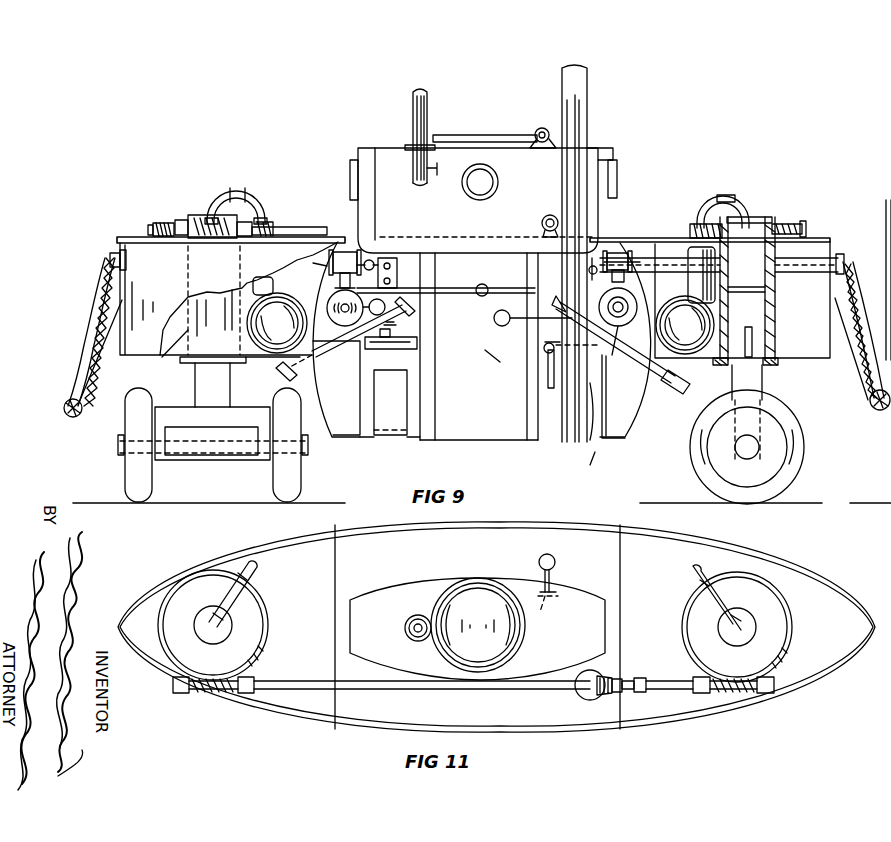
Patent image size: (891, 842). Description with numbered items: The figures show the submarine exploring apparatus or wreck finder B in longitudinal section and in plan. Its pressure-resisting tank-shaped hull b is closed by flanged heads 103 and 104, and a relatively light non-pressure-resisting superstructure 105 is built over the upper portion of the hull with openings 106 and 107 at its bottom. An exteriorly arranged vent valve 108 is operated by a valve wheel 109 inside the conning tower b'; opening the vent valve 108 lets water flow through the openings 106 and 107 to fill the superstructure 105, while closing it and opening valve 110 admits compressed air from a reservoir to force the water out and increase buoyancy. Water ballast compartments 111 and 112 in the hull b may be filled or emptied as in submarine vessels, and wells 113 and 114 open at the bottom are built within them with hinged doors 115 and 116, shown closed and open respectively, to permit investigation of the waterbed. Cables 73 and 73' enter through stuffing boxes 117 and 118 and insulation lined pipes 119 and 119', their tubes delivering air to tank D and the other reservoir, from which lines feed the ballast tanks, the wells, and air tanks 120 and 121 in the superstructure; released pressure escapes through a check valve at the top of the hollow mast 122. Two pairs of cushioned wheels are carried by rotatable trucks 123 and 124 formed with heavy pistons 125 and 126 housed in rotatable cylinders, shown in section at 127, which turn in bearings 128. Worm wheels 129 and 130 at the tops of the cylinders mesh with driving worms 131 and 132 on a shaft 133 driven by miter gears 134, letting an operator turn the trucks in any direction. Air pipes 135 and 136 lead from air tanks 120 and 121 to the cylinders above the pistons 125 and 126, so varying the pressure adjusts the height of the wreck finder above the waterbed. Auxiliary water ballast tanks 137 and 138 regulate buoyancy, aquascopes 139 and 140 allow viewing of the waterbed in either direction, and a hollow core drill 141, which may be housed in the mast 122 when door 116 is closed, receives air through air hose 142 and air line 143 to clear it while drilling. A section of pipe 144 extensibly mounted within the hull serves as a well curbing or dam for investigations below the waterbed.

In FIG. 9, the bronze wire cable 73 is at (82, 337).
In FIG. 9, the bronze cable 73' is at (847, 336).
In FIG. 9, the flanged head 103 is at (327, 304).
In FIG. 9, the flanged head 104 is at (637, 279).
In FIG. 9, the superstructure 105 is at (648, 236).
In FIG. 11, the superstructure 105 is at (568, 528).
In FIG. 9, the opening 106 is at (676, 364).
In FIG. 9, the opening 107 is at (280, 352).
In FIG. 11, the vent valve 108 is at (538, 563).
In FIG. 9, the valve wheel 109 is at (542, 221).
In FIG. 11, the valve wheel 109 is at (554, 610).
In FIG. 9, the valve 110 is at (385, 311).
In FIG. 9, the water ballast compartment 111 is at (336, 388).
In FIG. 9, the water ballast compartment 112 is at (620, 396).
In FIG. 9, the well 113 is at (391, 402).
In FIG. 9, the well 114 is at (606, 460).
In FIG. 9, the hinged door 115 is at (378, 349).
In FIG. 9, the hinged door 116 is at (547, 370).
In FIG. 9, the stuffing box 117 is at (110, 258).
In FIG. 9, the stuffing box 118 is at (842, 264).
In FIG. 9, the insulation lined pipe 119 is at (291, 260).
In FIG. 9, the insulation lined pipe 119' is at (719, 273).
In FIG. 9, the air tank 120 is at (692, 278).
In FIG. 9, the air tank 121 is at (333, 262).
In FIG. 9, the hollow mast 122 is at (587, 100).
In FIG. 9, the rotatable truck 123 is at (213, 445).
In FIG. 9, the rotatable truck 124 is at (760, 410).
In FIG. 9, the piston 125 is at (230, 392).
In FIG. 9, the piston 126 is at (763, 385).
In FIG. 9, the rotatable cylinder 127 is at (776, 294).
In FIG. 9, the bearing 128 is at (170, 352).
In FIG. 9, the worm wheel 129 is at (160, 222).
In FIG. 11, the worm wheel 129 is at (213, 625).
In FIG. 9, the worm wheel 130 is at (788, 226).
In FIG. 11, the worm wheel 130 is at (737, 627).
In FIG. 9, the driving worm 131 is at (212, 227).
In FIG. 11, the driving worm 131 is at (240, 696).
In FIG. 11, the driving worm 132 is at (712, 697).
In FIG. 9, the shaft 133 is at (285, 232).
In FIG. 11, the shaft 133 is at (412, 693).
In FIG. 11, the miter gears 134 is at (575, 695).
In FIG. 9, the air pipe 135 is at (223, 193).
In FIG. 11, the air pipe 135 is at (258, 566).
In FIG. 9, the air pipe 136 is at (719, 206).
In FIG. 11, the air pipe 136 is at (692, 568).
In FIG. 9, the auxiliary water ballast tank 137 is at (277, 323).
In FIG. 9, the auxiliary water ballast tank 138 is at (685, 325).
In FIG. 9, the aquascope 139 is at (412, 311).
In FIG. 9, the aquascope 140 is at (547, 319).
In FIG. 9, the hollow core drill 141 is at (573, 398).
In FIG. 9, the air hose 142 is at (562, 171).
In FIG. 9, the air line 143 is at (479, 296).
In FIG. 9, the section of pipe 144 is at (422, 442).
In FIG. 9, the tank-shaped hull b is at (482, 356).
In FIG. 9, the conning tower b' is at (380, 138).
In FIG. 11, the conning tower b' is at (465, 612).
In FIG. 11, the submarine exploring apparatus B is at (477, 616).
In FIG. 9, the air tank D is at (621, 345).